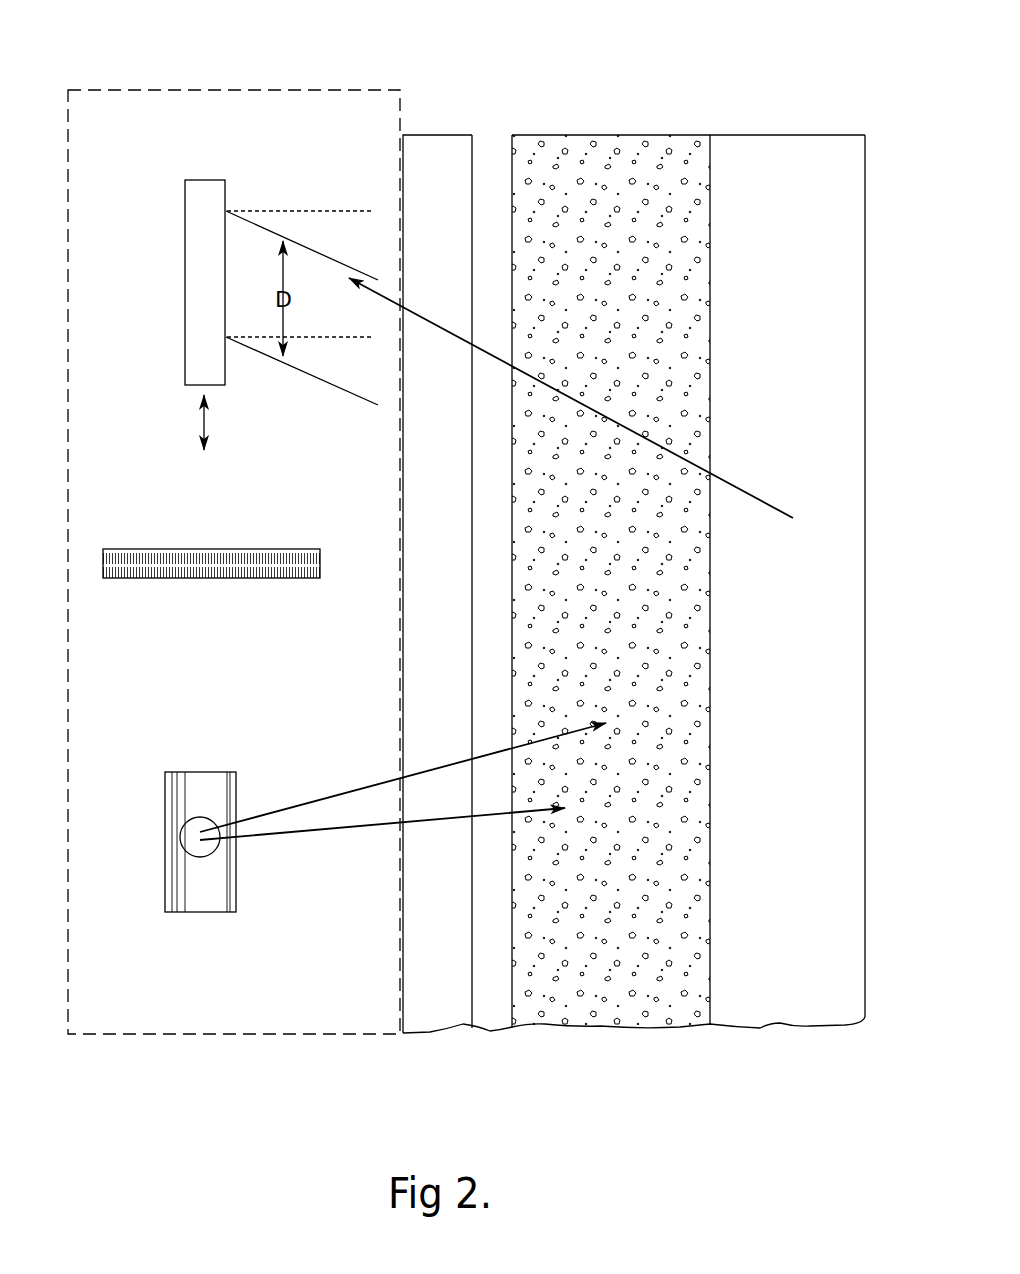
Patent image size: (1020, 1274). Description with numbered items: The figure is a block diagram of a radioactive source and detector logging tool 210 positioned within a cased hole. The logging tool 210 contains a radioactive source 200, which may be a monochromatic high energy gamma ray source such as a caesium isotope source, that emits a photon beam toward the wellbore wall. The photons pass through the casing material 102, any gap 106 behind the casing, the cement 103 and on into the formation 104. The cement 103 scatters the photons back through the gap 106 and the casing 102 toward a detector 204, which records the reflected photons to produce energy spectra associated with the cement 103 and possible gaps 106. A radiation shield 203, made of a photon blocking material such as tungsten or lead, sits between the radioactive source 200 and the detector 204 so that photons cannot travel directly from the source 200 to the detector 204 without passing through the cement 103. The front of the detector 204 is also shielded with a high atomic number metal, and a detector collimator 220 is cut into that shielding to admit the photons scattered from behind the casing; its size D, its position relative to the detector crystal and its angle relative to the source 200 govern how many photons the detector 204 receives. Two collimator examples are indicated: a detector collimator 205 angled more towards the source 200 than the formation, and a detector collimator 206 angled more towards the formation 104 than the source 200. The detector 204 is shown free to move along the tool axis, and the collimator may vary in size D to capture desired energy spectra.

The logging tool 210 is at (157, 78).
The casing material 102 is at (432, 1034).
The gap 106 is at (490, 1017).
The cement 103 is at (611, 135).
The formation 104 is at (762, 135).
The detector 204 is at (185, 290).
The detector collimator 220 is at (300, 200).
The detector collimator 205 is at (305, 372).
The detector collimator 206 is at (257, 338).
The radiation shield 203 is at (207, 548).
The radioactive source 200 is at (200, 817).